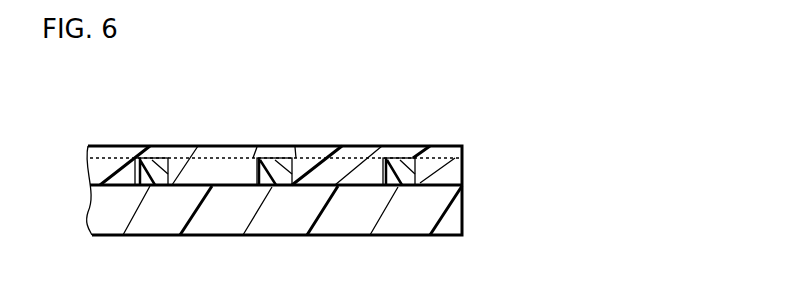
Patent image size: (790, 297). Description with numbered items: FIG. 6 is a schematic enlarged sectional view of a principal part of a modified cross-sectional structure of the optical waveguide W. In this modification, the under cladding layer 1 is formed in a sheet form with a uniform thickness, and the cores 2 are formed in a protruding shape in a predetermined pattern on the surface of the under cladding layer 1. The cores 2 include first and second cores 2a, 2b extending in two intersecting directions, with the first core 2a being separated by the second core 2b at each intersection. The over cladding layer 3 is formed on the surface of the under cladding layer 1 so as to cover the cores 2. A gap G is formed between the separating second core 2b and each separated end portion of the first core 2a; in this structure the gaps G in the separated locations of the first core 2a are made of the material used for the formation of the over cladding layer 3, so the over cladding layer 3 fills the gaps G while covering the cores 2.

The under cladding layer 1 is at (423, 215).
The cores 2 is at (358, 166).
The first core 2a is at (470, 165).
The second core 2b is at (415, 188).
The over cladding layer 3 is at (447, 141).
The gap G is at (295, 147).
The optical waveguide W is at (641, 108).